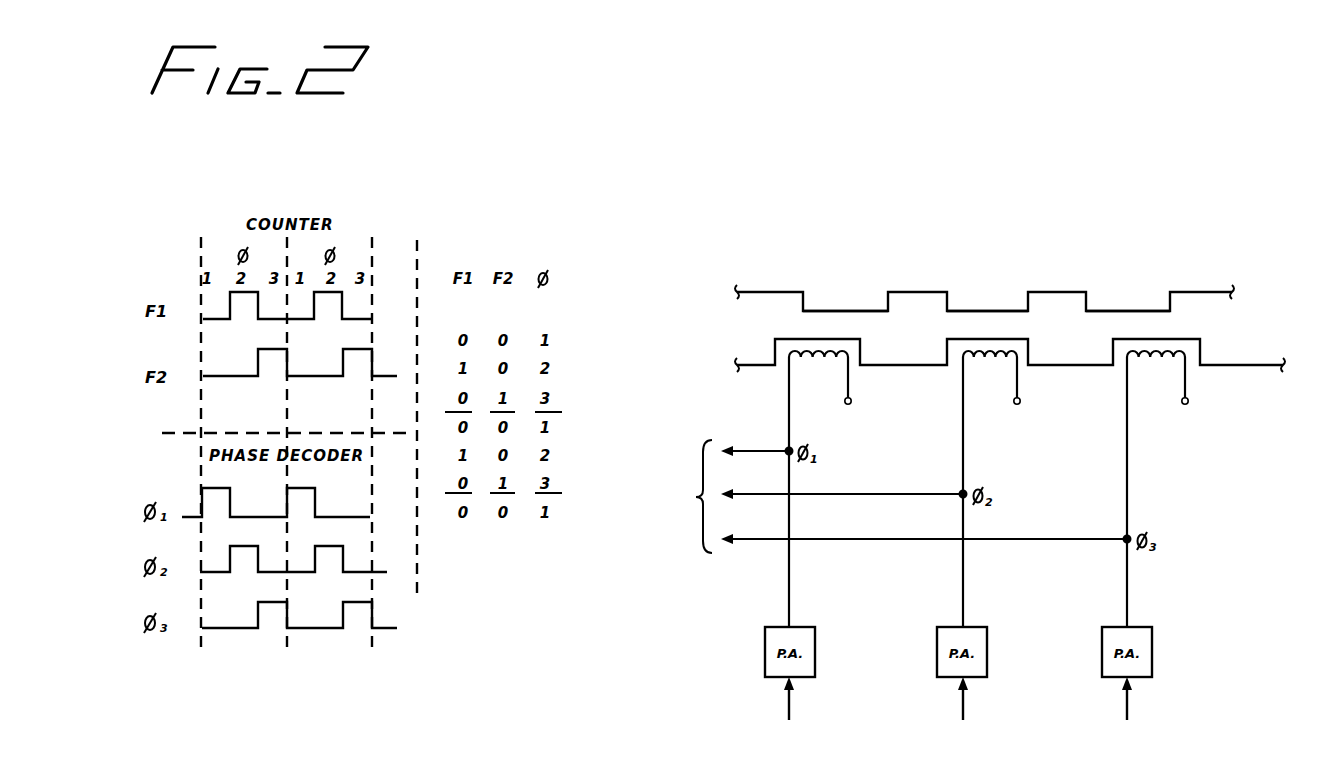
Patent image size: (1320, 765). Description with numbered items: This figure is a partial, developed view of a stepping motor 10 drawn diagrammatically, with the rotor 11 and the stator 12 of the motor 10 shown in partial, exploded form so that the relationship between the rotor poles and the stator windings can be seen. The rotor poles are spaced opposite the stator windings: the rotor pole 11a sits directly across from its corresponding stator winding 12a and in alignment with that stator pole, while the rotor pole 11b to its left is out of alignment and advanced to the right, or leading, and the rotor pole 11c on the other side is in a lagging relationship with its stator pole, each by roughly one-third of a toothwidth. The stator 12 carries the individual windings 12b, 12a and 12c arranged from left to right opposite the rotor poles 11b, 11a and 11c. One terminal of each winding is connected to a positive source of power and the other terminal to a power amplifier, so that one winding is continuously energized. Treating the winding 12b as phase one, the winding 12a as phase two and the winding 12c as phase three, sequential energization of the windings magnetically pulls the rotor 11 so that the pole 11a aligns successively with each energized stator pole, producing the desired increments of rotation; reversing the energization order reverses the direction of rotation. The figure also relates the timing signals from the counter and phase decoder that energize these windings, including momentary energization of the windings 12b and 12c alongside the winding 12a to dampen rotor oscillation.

The stepping motor 10 is at (979, 439).
The rotor 11 is at (984, 281).
The rotor pole 11a is at (1003, 306).
The rotor pole 11b is at (855, 306).
The rotor pole 11c is at (1147, 306).
The stator 12 is at (983, 483).
The stator winding 12a is at (968, 358).
The stator winding 12b is at (789, 360).
The stator winding 12c is at (1132, 358).